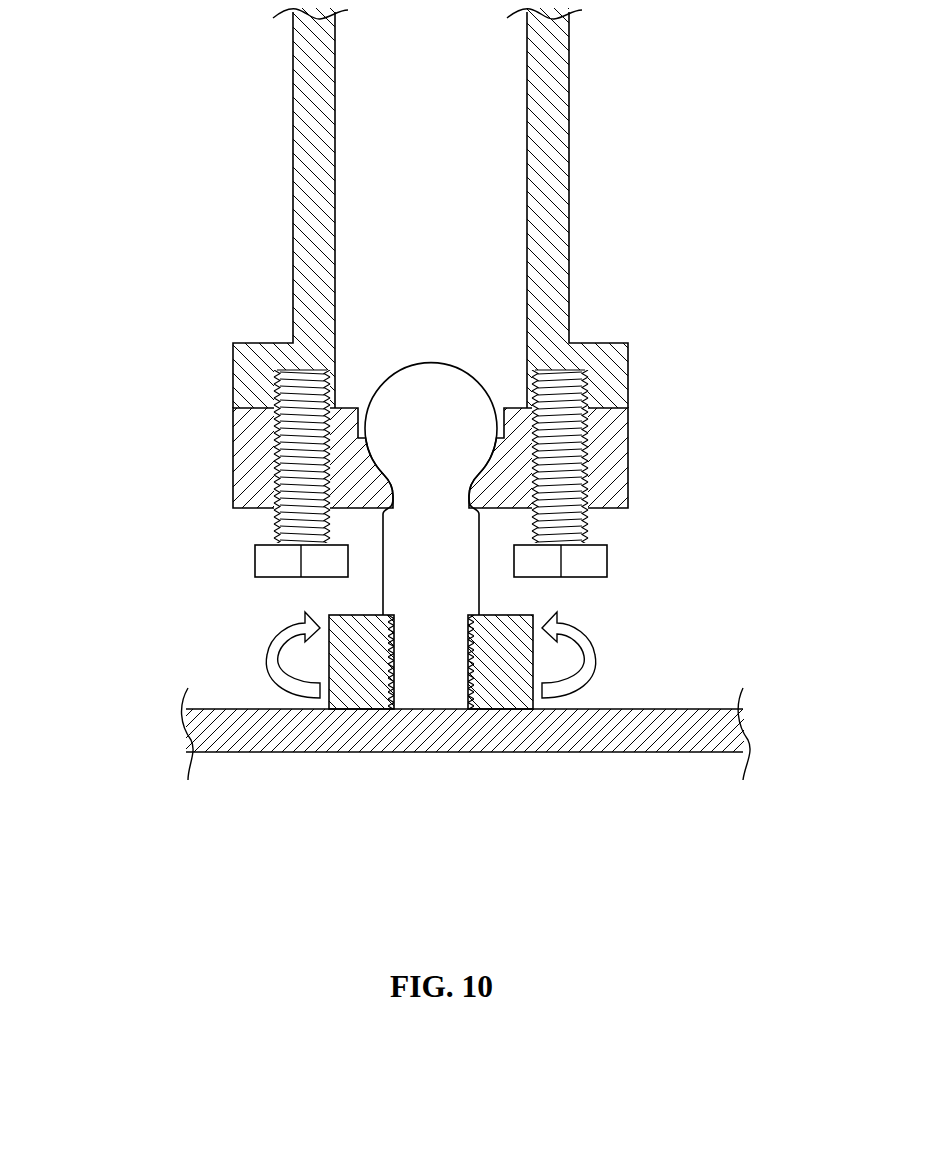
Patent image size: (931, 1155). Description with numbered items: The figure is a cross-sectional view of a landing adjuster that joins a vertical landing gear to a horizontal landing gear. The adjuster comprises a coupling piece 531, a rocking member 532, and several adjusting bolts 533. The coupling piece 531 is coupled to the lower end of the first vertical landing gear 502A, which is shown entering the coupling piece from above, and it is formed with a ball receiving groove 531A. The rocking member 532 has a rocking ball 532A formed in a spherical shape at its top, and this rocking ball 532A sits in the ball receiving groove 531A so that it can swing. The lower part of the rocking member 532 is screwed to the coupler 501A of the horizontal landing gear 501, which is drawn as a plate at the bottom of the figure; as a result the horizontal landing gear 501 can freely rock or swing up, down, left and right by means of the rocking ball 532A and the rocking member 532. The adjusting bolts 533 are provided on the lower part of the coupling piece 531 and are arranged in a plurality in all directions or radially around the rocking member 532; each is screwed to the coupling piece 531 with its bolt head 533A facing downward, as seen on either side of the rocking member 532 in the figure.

The horizontal landing gear 501 is at (607, 737).
The coupler 501A is at (358, 695).
The first vertical landing gear 502A is at (560, 200).
The coupling piece 531 is at (628, 453).
The ball receiving groove 531A is at (372, 492).
The rocking member 532 is at (420, 576).
The rocking ball 532A is at (458, 392).
The adjusting bolt 533 is at (268, 444).
The bolt head 533A is at (598, 563).